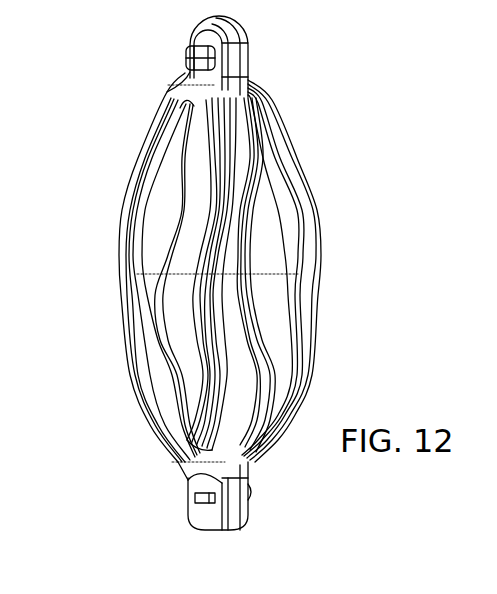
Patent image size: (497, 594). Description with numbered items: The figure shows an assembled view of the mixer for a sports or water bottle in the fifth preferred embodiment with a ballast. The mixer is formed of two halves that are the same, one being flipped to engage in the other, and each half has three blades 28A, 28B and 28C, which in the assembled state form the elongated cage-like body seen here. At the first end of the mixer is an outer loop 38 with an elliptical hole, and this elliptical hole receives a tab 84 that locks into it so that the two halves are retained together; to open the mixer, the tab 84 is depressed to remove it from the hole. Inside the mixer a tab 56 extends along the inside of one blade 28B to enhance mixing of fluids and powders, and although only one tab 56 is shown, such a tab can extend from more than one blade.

The tab 84 is at (187, 56).
The blade 28C is at (220, 120).
The blade 28B is at (120, 254).
The blade 28A is at (312, 350).
The tab 56 is at (200, 322).
The outer loop 38 is at (200, 523).